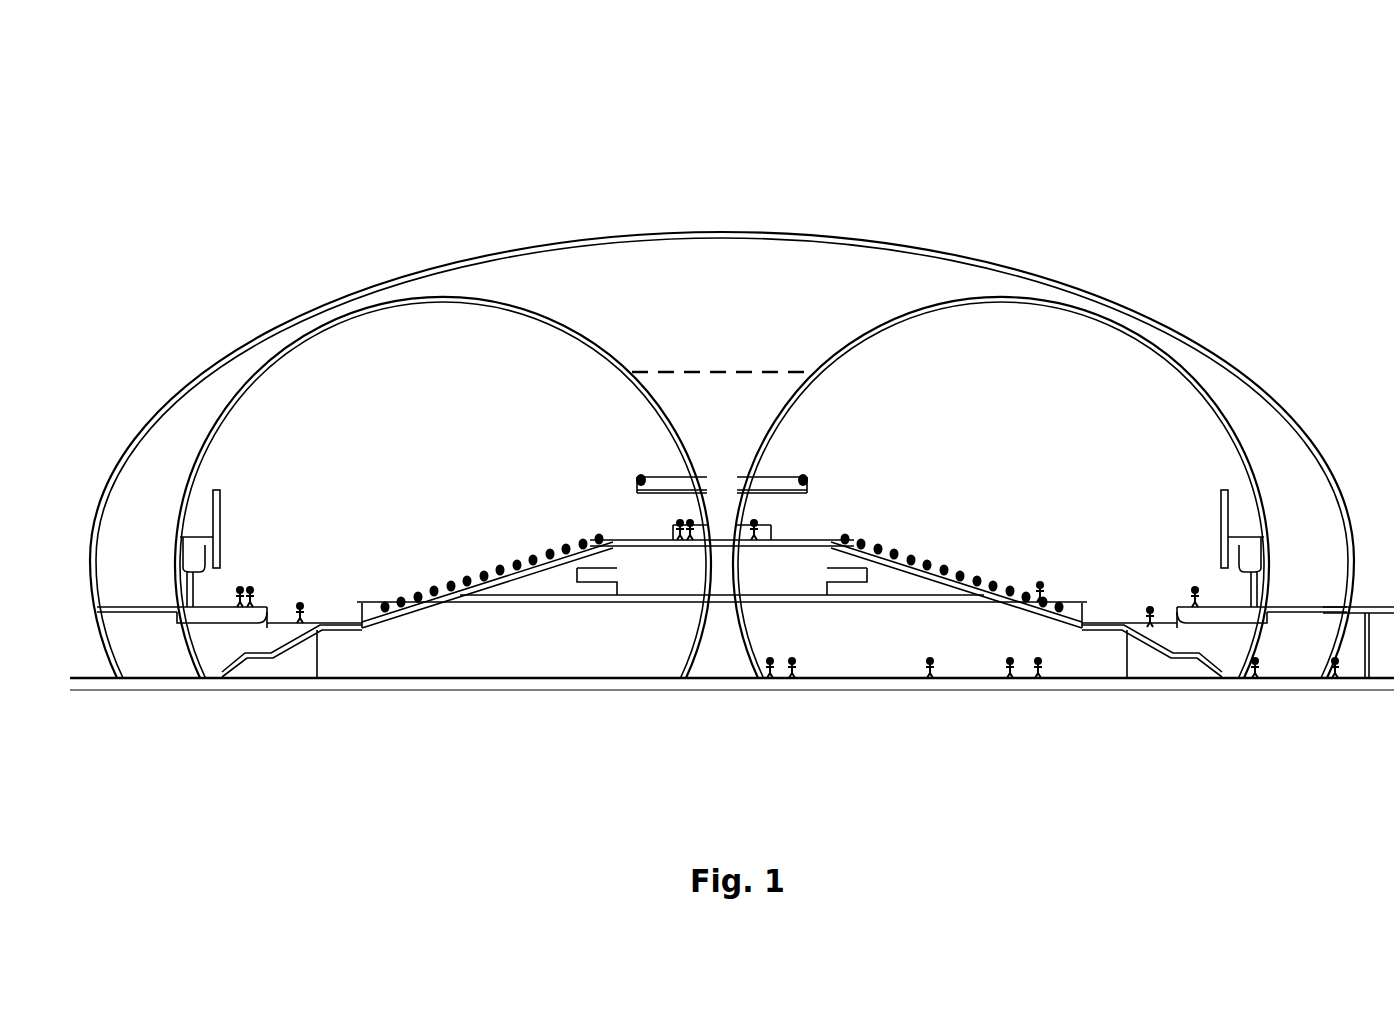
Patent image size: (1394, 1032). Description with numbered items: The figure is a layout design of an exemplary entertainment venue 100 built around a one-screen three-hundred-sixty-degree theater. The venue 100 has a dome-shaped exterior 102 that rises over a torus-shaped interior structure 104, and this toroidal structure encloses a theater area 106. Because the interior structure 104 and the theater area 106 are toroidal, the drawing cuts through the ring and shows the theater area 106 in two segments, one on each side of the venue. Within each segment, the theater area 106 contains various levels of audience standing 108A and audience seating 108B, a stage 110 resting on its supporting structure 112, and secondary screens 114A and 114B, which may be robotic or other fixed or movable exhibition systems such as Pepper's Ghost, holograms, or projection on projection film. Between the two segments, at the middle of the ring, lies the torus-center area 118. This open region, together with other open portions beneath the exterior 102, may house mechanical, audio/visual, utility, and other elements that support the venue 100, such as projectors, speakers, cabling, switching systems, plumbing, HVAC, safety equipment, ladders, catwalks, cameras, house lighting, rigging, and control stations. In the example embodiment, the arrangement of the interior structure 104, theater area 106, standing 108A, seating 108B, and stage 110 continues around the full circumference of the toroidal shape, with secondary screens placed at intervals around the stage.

The entertainment venue 100 is at (366, 124).
The dome-shaped exterior 102 is at (233, 358).
The torus-shaped interior structure 104 is at (553, 318).
The theater area 106 is at (902, 374).
The audience standing 108A is at (327, 616).
The audience seating 108B is at (538, 530).
The stage 110 is at (215, 607).
The supporting structure 112 is at (220, 627).
The secondary screen 114A is at (215, 490).
The secondary screen 114B is at (1228, 490).
The torus-center area 118 is at (743, 440).